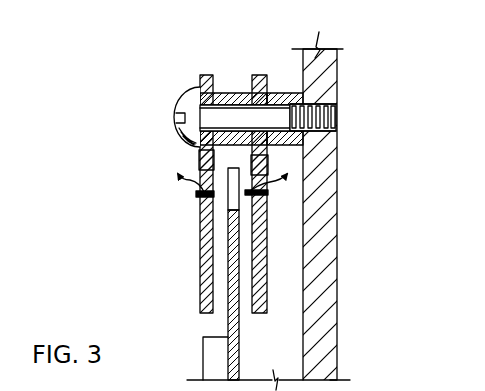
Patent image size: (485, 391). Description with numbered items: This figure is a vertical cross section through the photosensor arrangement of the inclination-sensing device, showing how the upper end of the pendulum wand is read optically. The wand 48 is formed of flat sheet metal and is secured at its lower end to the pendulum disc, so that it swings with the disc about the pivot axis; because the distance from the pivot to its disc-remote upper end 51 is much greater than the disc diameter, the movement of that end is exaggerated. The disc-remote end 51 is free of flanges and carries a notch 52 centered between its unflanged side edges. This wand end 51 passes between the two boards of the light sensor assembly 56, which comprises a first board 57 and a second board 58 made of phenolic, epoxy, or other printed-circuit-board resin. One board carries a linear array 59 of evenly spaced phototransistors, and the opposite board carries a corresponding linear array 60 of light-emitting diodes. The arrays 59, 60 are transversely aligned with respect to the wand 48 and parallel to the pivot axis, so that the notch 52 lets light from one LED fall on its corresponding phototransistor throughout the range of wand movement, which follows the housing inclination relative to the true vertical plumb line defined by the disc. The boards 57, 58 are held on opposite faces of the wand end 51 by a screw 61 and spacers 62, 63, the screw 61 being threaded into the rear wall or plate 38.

The rear wall or plate 38 is at (301, 258).
The wand 48 is at (203, 337).
The disc-remote upper end of the wand 51 is at (228, 240).
The notch 52 is at (198, 162).
The light sensor assembly 56 is at (185, 202).
The first board 57 is at (200, 272).
The second board 58 is at (265, 228).
The linear array of phototransistors 59 is at (262, 168).
The linear array of light-emitting diodes 60 is at (200, 220).
The screw 61 is at (188, 92).
The spacer 62 is at (236, 78).
The spacer 63 is at (285, 80).